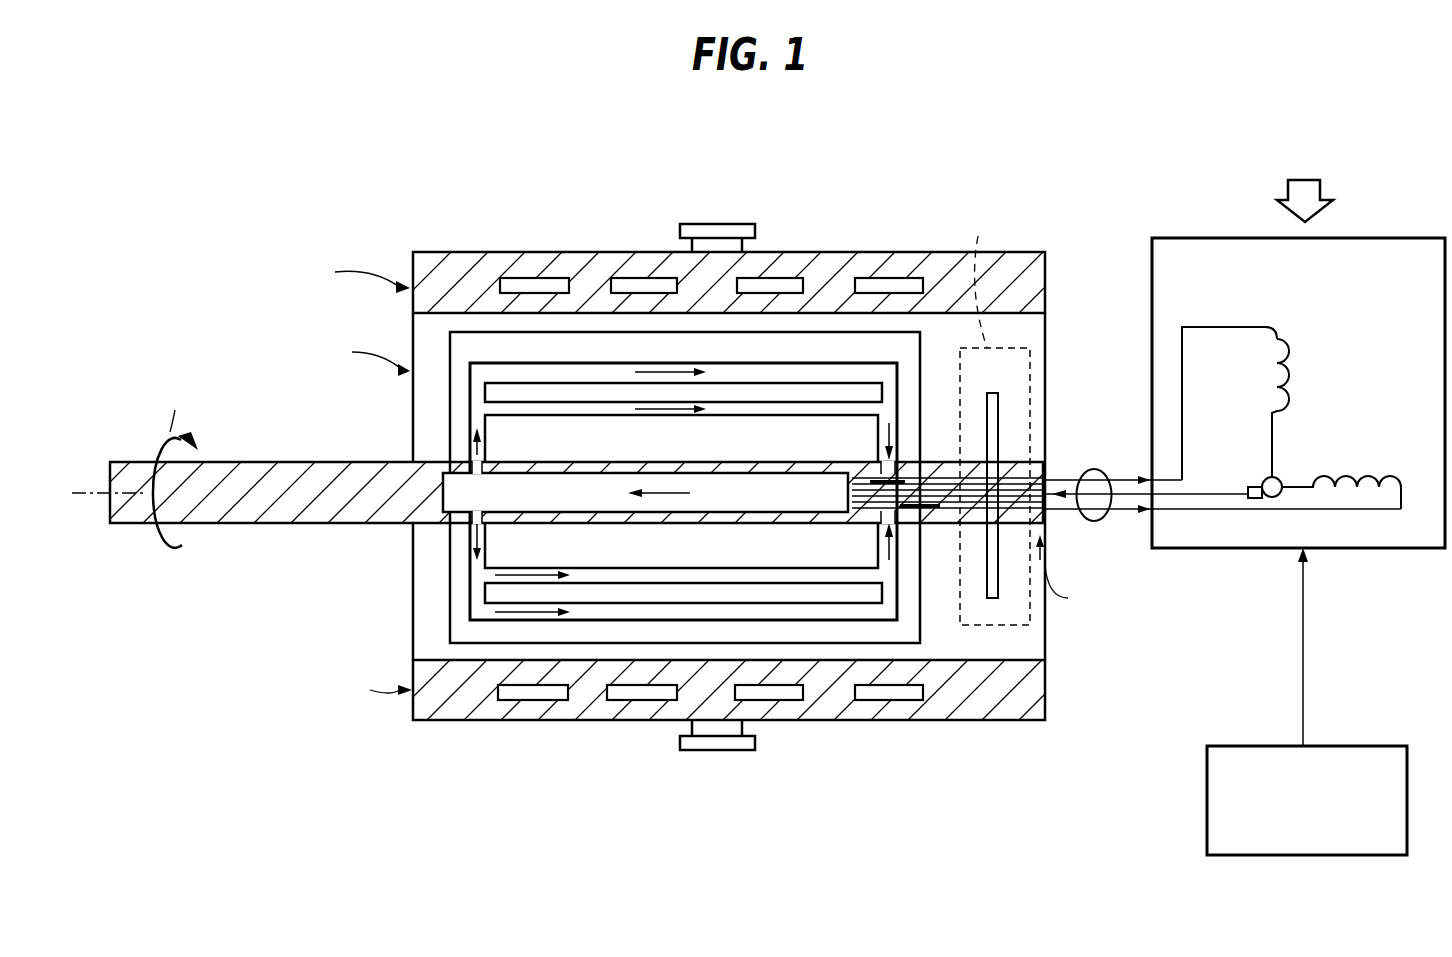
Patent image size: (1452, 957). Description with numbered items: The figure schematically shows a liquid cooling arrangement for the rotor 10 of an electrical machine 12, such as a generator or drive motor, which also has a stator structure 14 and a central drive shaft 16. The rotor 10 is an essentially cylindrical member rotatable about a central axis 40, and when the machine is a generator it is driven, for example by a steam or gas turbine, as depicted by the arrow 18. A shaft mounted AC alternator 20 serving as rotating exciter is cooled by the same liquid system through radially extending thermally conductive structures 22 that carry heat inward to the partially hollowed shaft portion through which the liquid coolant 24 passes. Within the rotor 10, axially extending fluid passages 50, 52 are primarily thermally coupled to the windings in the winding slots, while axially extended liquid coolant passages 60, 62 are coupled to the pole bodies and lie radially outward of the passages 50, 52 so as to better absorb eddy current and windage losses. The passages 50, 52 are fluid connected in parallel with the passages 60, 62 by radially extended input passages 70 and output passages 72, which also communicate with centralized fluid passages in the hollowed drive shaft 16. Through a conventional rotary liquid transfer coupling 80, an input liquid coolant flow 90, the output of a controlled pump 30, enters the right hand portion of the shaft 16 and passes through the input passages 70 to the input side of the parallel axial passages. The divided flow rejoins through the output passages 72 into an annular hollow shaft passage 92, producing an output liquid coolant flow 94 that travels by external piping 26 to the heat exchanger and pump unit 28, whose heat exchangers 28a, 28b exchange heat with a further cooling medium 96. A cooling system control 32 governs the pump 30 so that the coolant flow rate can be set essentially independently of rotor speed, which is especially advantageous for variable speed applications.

The rotor 10 is at (623, 492).
The electrical machine 12 is at (636, 483).
The stator structure 14 is at (646, 468).
The central drive shaft 16 is at (555, 485).
The arrow 18 is at (173, 485).
The shaft mounted AC alternator 20 is at (1011, 406).
The radially extending thermally conductive structures 22 is at (1036, 495).
The liquid coolant 24 is at (645, 492).
The external piping 26 is at (1101, 472).
The heat exchangers, pump, etc. 28 is at (1298, 367).
The heat exchanger 28a is at (1311, 408).
The heat exchanger 28b is at (1344, 467).
The pump 30 is at (1283, 462).
The cooling system control 32 is at (1307, 725).
The central axis 40 is at (106, 462).
The axially extending fluid passage 50 is at (681, 438).
The axially extending fluid passage 52 is at (681, 545).
The axially extended liquid coolant passage 60 is at (683, 374).
The axially extended liquid coolant passage 62 is at (683, 608).
The radially extended input passage 70 is at (420, 507).
The radially extended output passage 72 is at (928, 512).
The rotary liquid transfer coupling 80 is at (1021, 548).
The input liquid coolant flow 90 is at (1146, 462).
The annular hollow shaft passage 92 is at (945, 463).
The output liquid coolant flow 94 is at (1223, 490).
The further cooling medium 96 is at (1317, 173).